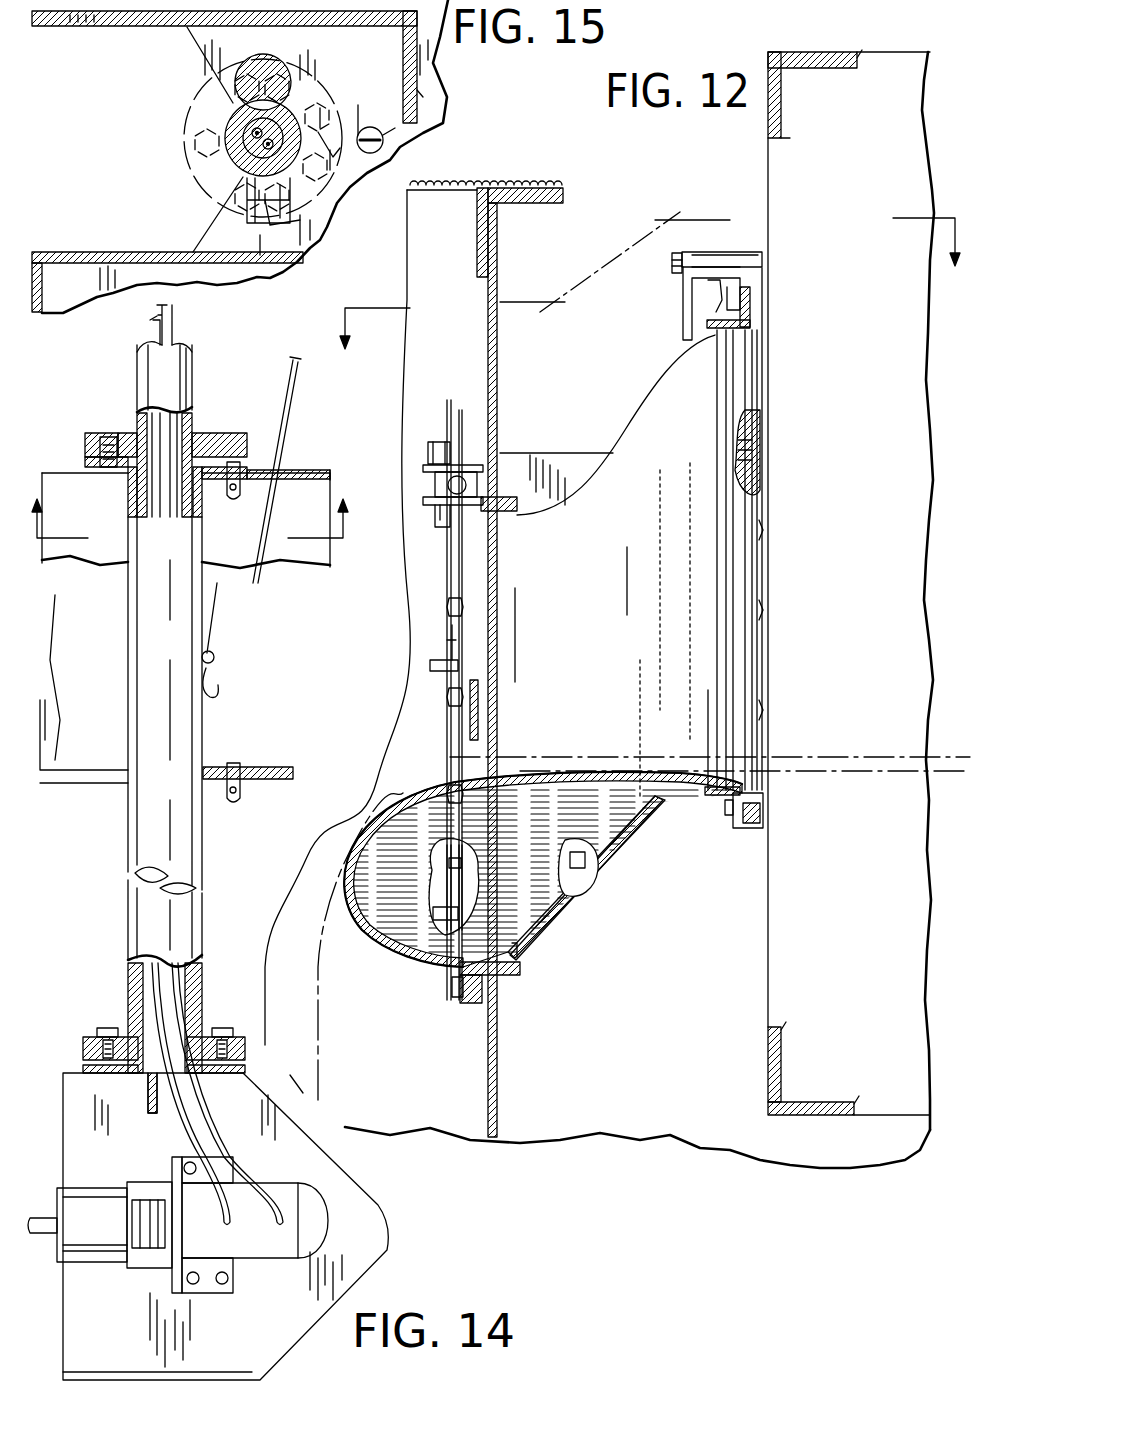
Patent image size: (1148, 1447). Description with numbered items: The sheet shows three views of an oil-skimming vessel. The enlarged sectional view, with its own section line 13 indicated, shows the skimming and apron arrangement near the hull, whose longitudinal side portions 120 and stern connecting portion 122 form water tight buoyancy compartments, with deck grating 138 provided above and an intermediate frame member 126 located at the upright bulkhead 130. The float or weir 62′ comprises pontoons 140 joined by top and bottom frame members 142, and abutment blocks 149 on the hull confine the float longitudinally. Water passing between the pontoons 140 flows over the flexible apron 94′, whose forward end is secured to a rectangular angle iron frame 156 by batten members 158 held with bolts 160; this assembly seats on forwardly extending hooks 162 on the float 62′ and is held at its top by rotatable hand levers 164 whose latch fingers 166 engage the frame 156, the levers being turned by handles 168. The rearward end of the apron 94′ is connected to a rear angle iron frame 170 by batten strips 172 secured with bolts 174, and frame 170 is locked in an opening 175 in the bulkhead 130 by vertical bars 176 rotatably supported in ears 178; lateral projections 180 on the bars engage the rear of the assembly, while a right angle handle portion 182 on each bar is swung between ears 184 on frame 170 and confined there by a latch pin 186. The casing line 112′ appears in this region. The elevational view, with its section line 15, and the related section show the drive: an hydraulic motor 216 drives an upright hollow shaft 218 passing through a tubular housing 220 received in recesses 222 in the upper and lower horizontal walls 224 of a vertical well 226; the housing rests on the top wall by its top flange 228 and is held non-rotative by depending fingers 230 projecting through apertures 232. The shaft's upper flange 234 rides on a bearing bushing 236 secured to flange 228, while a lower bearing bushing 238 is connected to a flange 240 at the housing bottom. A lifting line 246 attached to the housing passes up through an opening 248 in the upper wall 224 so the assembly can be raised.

In FIG. 12, the section line 13— 13 is at (661, 282).
In FIG. 14, the section line 15— 15 is at (199, 532).
In FIG. 12, the float or weir 62′ is at (907, 58).
In FIG. 12, the flexible apron 94′ is at (605, 835).
In FIG. 12, the fan casing 112′ is at (347, 837).
In FIG. 12, the longitudinal side portion 120 is at (652, 205).
In FIG. 15, the connecting portion 122 is at (423, 97).
In FIG. 12, the intermediate frame member 126 is at (545, 186).
In FIG. 12, the upright bulkhead 130 is at (486, 350).
In FIG. 12, the deck grating 138 is at (452, 183).
In FIG. 12, the pontoon 140 is at (903, 1093).
In FIG. 12, the frame member 142 is at (815, 47).
In FIG. 12, the abutment block 149 is at (577, 462).
In FIG. 12, the angle iron frame 156 is at (752, 318).
In FIG. 12, the batten member 158 is at (765, 568).
In FIG. 12, the bolt 160 is at (785, 733).
In FIG. 12, the hook 162 is at (735, 815).
In FIG. 12, the hand lever 164 is at (745, 255).
In FIG. 12, the latch finger 166 is at (708, 275).
In FIG. 12, the handle 168 is at (684, 323).
In FIG. 12, the rear angle iron frame 170 is at (447, 607).
In FIG. 12, the batten strip 172 is at (470, 714).
In FIG. 12, the bolt 174 is at (447, 618).
In FIG. 12, the opening 175 is at (490, 497).
In FIG. 12, the vertical bar 176 is at (455, 745).
In FIG. 12, the ear 178 is at (430, 667).
In FIG. 12, the lateral projection 180 is at (452, 640).
In FIG. 12, the right angle handle portion 182 is at (457, 476).
In FIG. 12, the ear 184 is at (423, 500).
In FIG. 12, the latch pin 186 is at (428, 452).
In FIG. 14, the hydraulic motor 216 is at (293, 1240).
In FIG. 15, the hollow shaft 218 is at (228, 152).
In FIG. 14, the hollow shaft 218 is at (192, 348).
In FIG. 15, the tubular housing 220 is at (228, 128).
In FIG. 14, the tubular housing 220 is at (128, 902).
In FIG. 15, the recess 222 is at (290, 187).
In FIG. 14, the recess 222 is at (208, 490).
In FIG. 15, the horizontal wall 224 is at (233, 103).
In FIG. 12, the horizontal wall 224 is at (423, 468).
In FIG. 14, the horizontal wall 224 is at (325, 471).
In FIG. 15, the vertical well 226 is at (128, 27).
In FIG. 14, the vertical well 226 is at (90, 548).
In FIG. 15, the top flange 228 is at (205, 100).
In FIG. 14, the top flange 228 is at (95, 462).
In FIG. 15, the depending finger 230 is at (333, 157).
In FIG. 14, the depending finger 230 is at (243, 487).
In FIG. 14, the aperture 232 is at (248, 470).
In FIG. 14, the upper flange 234 is at (110, 432).
In FIG. 15, the bearing bushing 236 is at (287, 223).
In FIG. 14, the bearing bushing 236 is at (98, 445).
In FIG. 14, the lower bearing bushing 238 is at (245, 1066).
In FIG. 14, the flange 240 is at (95, 1035).
In FIG. 15, the lifting line 246 is at (372, 147).
In FIG. 14, the lifting line 246 is at (292, 380).
In FIG. 15, the opening 248 is at (395, 128).
In FIG. 14, the opening 248 is at (283, 476).